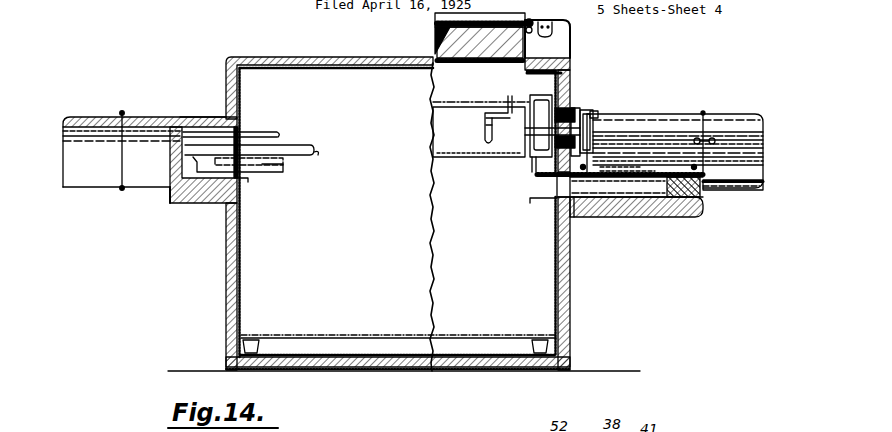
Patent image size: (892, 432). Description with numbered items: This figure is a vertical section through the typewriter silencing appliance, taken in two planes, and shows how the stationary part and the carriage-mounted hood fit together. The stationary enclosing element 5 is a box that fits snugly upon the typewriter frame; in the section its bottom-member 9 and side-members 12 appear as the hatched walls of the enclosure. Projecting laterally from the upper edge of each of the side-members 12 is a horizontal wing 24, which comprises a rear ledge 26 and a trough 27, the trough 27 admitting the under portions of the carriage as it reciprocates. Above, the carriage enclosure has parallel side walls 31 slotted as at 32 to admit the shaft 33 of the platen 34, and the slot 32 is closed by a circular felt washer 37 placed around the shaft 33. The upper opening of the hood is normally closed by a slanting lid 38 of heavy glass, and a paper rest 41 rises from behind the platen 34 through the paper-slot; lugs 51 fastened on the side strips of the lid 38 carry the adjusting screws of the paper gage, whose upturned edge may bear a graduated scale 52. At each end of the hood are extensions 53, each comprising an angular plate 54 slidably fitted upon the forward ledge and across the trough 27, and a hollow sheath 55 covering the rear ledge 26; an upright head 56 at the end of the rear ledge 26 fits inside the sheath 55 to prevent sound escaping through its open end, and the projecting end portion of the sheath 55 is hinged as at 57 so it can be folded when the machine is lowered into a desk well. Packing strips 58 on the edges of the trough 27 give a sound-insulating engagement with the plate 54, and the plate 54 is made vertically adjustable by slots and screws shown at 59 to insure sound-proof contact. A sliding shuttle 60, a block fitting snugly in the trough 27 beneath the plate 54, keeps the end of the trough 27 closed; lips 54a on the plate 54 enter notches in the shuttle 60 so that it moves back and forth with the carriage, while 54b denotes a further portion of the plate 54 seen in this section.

The stationary enclosing element 5 is at (226, 280).
The bottom-member 9 is at (362, 372).
The side-members 12 is at (232, 358).
The horizontal wings 24 is at (200, 200).
The rear ledge 26 is at (172, 192).
The trough 27 is at (708, 212).
The side walls 31 is at (570, 68).
The slot 32 is at (588, 113).
The shaft 33 is at (595, 115).
The platen 34 is at (443, 124).
The circular felt washers 37 is at (577, 112).
The slanting lid 38 is at (531, 20).
The paper rest 41 is at (445, 18).
The lugs 51 is at (541, 24).
The graduated scale 52 is at (460, 42).
The extensions 53 is at (180, 117).
The angular plate 54 is at (607, 200).
The lips 54a is at (705, 188).
The pipe branch 54b is at (537, 176).
The hollow sheath 55 is at (150, 120).
The upright heads 56 is at (172, 157).
The hinge 57 is at (122, 113).
The packing strips 58 is at (580, 203).
The slots and screws 59 is at (583, 167).
The sliding shuttles 60 is at (682, 203).